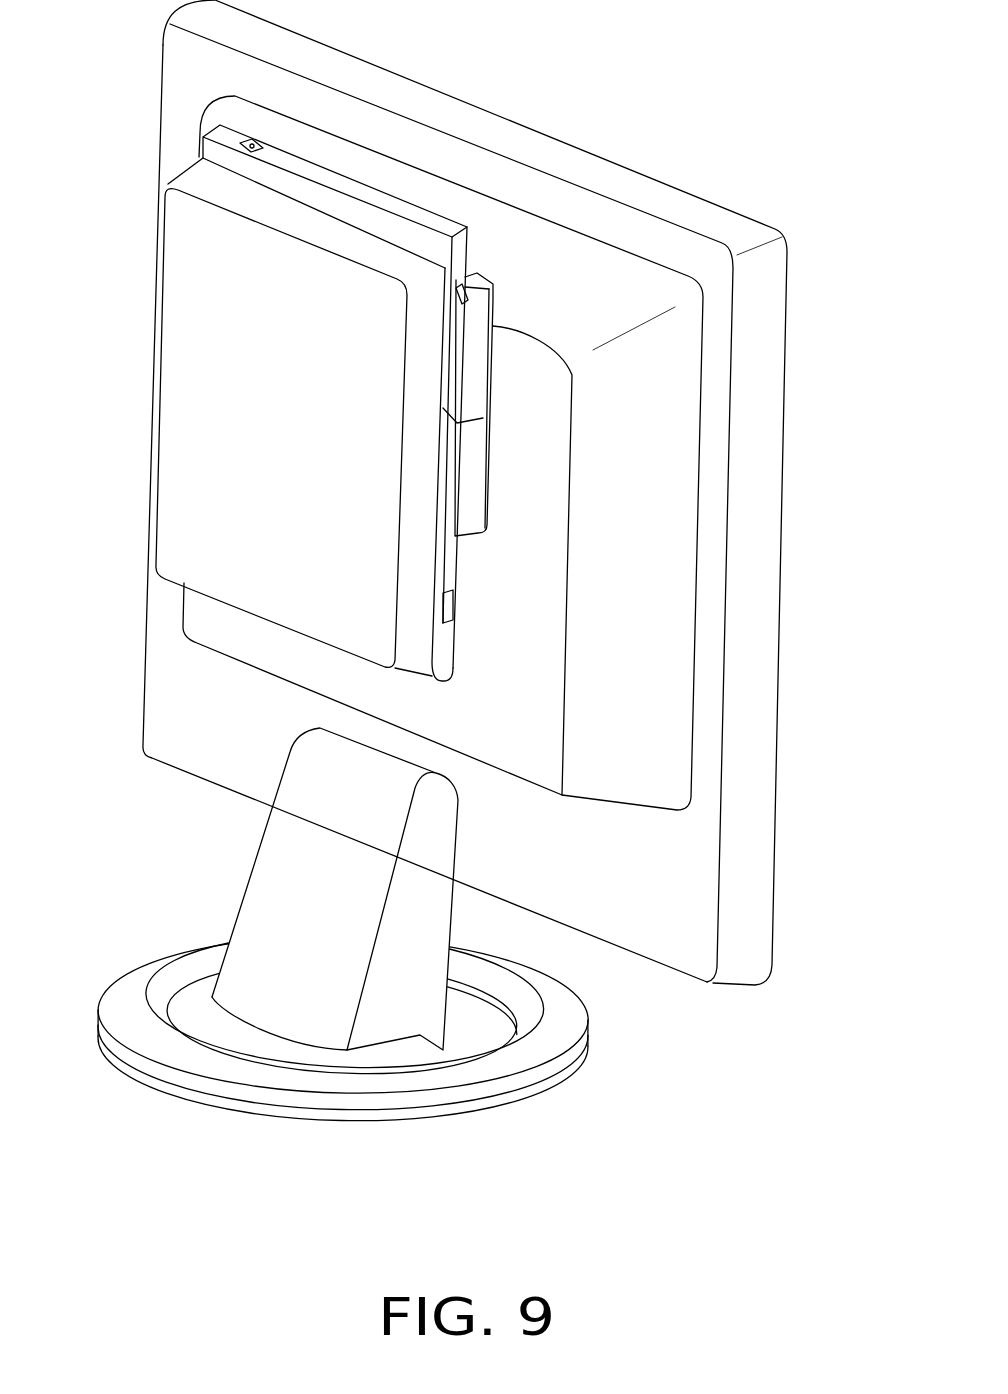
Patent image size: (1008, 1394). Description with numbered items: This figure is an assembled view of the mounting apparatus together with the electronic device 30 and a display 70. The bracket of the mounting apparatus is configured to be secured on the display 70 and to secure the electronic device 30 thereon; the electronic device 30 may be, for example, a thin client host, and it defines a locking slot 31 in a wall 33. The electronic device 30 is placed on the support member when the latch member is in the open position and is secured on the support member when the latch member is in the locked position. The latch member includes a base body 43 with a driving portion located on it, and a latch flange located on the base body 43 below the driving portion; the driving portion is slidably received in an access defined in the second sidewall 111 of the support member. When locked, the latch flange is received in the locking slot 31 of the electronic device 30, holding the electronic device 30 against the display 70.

The electronic device 30 is at (230, 367).
The locking slot 31 is at (466, 273).
The wall 33 is at (461, 252).
The base body 43 is at (473, 322).
The display 70 is at (760, 310).
The second sidewall 111 is at (470, 490).